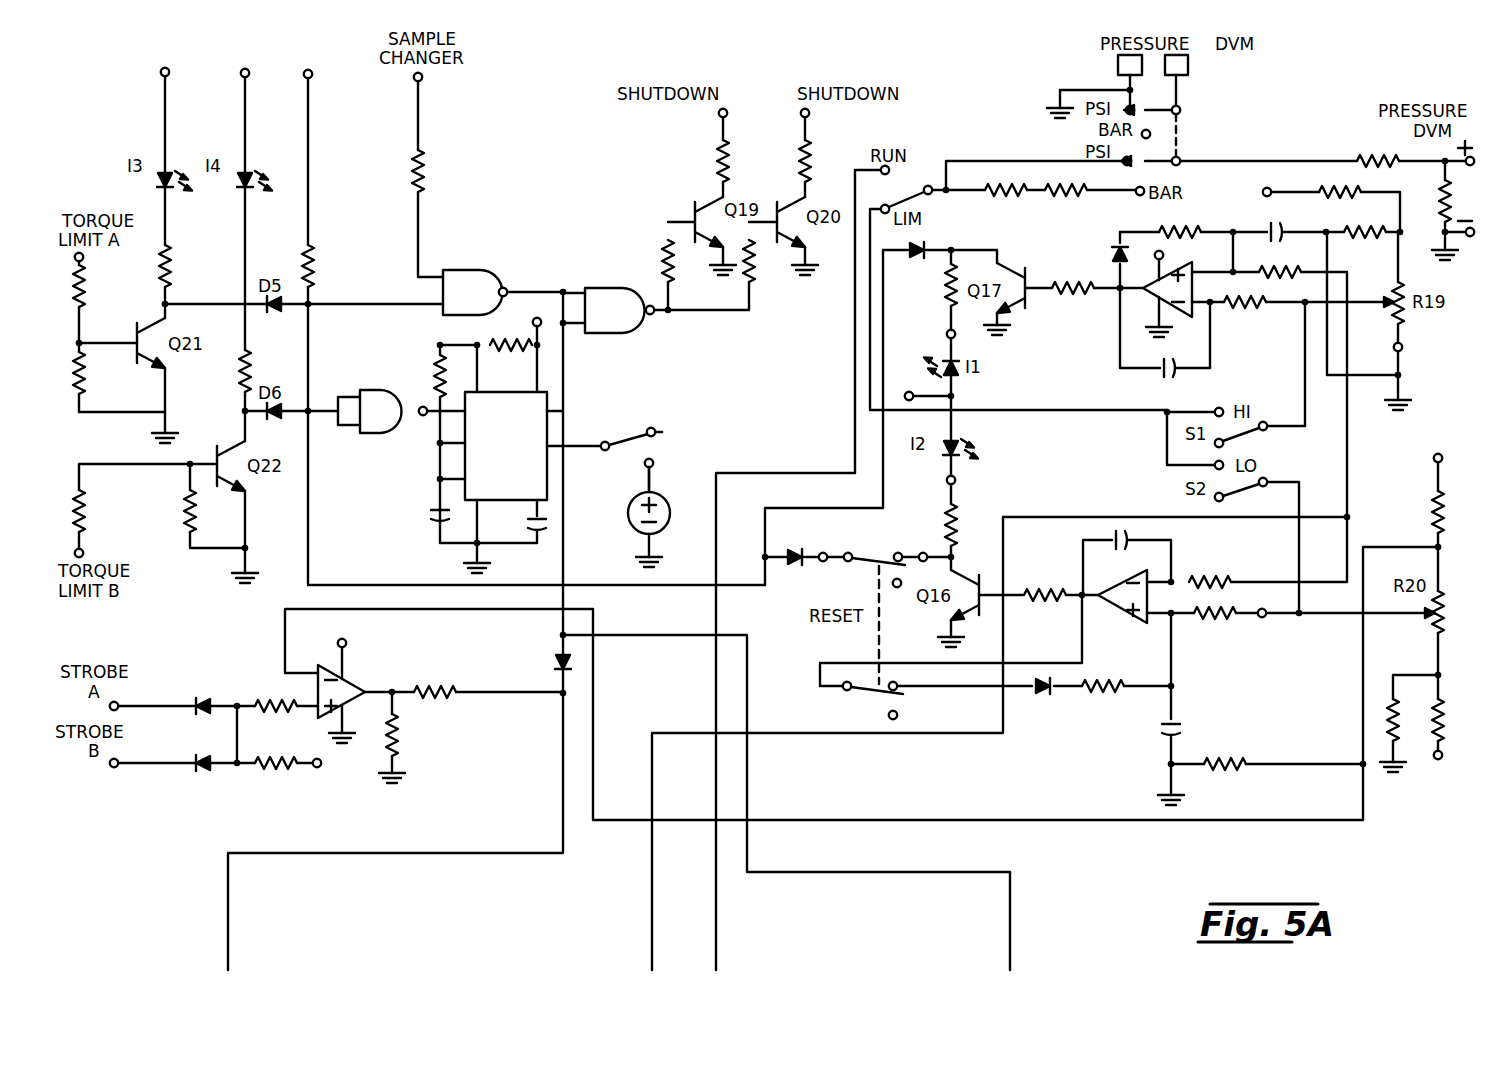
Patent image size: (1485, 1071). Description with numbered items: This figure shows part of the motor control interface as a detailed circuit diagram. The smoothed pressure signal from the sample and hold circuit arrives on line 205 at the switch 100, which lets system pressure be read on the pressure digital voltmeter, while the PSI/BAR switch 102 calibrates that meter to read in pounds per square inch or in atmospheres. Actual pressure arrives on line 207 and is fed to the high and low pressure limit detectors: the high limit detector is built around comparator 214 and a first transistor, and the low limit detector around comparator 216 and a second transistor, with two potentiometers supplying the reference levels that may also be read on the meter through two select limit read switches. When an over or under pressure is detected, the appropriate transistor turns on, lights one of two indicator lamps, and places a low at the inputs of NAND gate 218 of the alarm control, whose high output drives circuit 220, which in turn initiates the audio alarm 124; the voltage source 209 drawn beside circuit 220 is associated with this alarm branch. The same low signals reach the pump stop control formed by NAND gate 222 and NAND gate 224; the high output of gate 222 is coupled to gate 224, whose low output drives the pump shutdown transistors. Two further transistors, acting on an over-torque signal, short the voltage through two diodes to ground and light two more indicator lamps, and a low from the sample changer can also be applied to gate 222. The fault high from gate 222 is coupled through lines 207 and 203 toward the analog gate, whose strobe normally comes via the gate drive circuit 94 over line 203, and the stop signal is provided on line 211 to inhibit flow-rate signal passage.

The gate drive circuit 94 is at (351, 691).
The switch 100 is at (912, 186).
The PSI/BAR switch 102 is at (1182, 140).
The audio alarm 124 is at (700, 488).
The line 203 is at (229, 886).
The line 205 is at (716, 934).
The line 207 is at (651, 918).
The reference voltage source 209 is at (630, 516).
The line 211 is at (1010, 936).
The comparator 214 is at (1184, 316).
The comparator 216 is at (1122, 626).
The NAND gate 218 is at (383, 398).
The circuit 220 is at (560, 413).
The NAND gate 222 is at (492, 284).
The NAND gate 224 is at (632, 328).